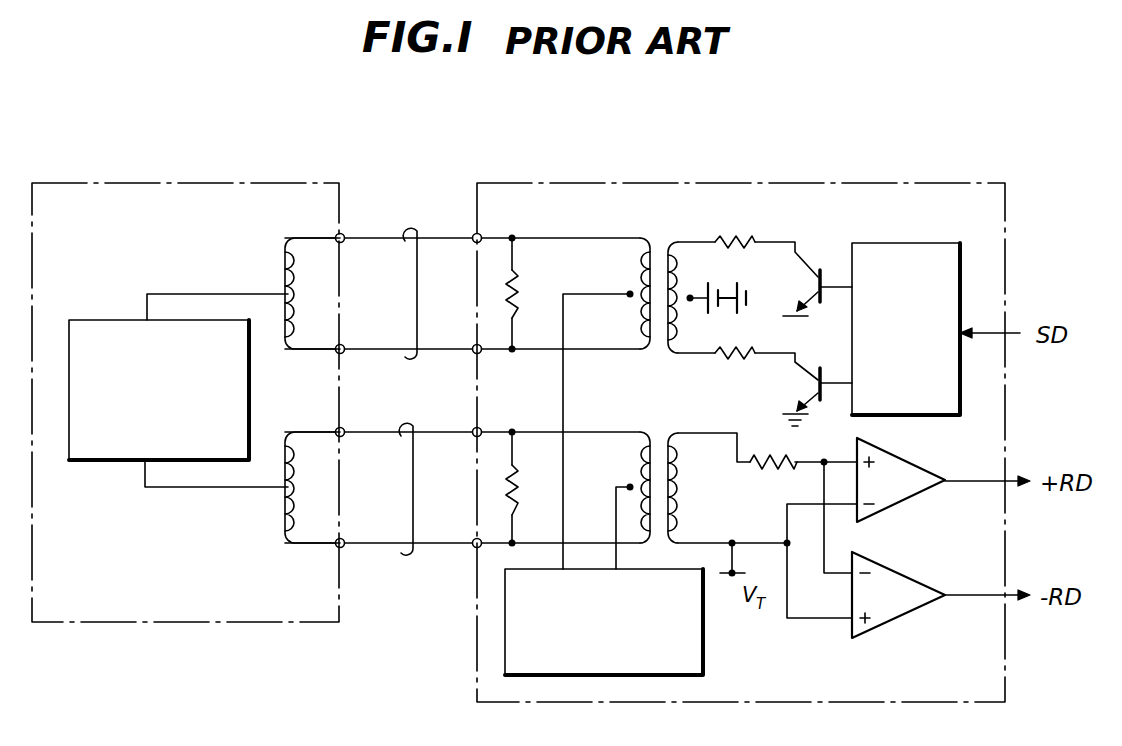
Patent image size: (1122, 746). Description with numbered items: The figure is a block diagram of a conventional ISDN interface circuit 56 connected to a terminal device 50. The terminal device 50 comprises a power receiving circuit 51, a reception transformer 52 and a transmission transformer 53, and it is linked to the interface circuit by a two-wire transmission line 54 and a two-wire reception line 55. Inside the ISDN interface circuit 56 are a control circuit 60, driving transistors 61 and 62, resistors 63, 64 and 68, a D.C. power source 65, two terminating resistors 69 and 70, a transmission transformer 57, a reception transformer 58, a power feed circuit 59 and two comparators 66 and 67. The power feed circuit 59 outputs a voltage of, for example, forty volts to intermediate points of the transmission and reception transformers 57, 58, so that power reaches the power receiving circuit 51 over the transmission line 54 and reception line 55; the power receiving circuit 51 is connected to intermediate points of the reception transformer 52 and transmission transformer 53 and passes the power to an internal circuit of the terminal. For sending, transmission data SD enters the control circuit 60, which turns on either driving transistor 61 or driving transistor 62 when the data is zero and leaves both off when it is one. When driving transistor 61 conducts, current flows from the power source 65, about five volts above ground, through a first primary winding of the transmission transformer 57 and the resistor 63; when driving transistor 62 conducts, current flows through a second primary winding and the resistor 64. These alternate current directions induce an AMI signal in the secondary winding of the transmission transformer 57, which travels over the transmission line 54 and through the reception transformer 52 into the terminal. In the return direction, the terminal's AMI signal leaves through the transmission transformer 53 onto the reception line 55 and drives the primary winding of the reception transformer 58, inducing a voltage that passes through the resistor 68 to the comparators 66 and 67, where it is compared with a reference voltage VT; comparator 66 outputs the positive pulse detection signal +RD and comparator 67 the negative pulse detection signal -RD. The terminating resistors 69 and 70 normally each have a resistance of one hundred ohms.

The terminal device 50 is at (187, 183).
The power receiving circuit 51 is at (125, 320).
The reception transformer 52 is at (294, 352).
The transmission transformer 53 is at (294, 546).
The two-wire transmission line 54 is at (416, 224).
The two-wire reception line 55 is at (405, 558).
The ISDN interface circuit 56 is at (538, 183).
The transmission transformer 57 is at (655, 352).
The reception transformer 58 is at (655, 434).
The power feed circuit 59 is at (704, 656).
The control circuit 60 is at (870, 243).
The driving transistor 61 is at (822, 266).
The driving transistor 62 is at (831, 368).
The resistor 63 is at (722, 232).
The resistor 64 is at (746, 356).
The D.C. power source 65 is at (720, 284).
The comparator 66 is at (892, 453).
The comparator 67 is at (892, 625).
The resistor 68 is at (772, 470).
The terminating resistor 69 is at (518, 296).
The terminating resistor 70 is at (516, 490).